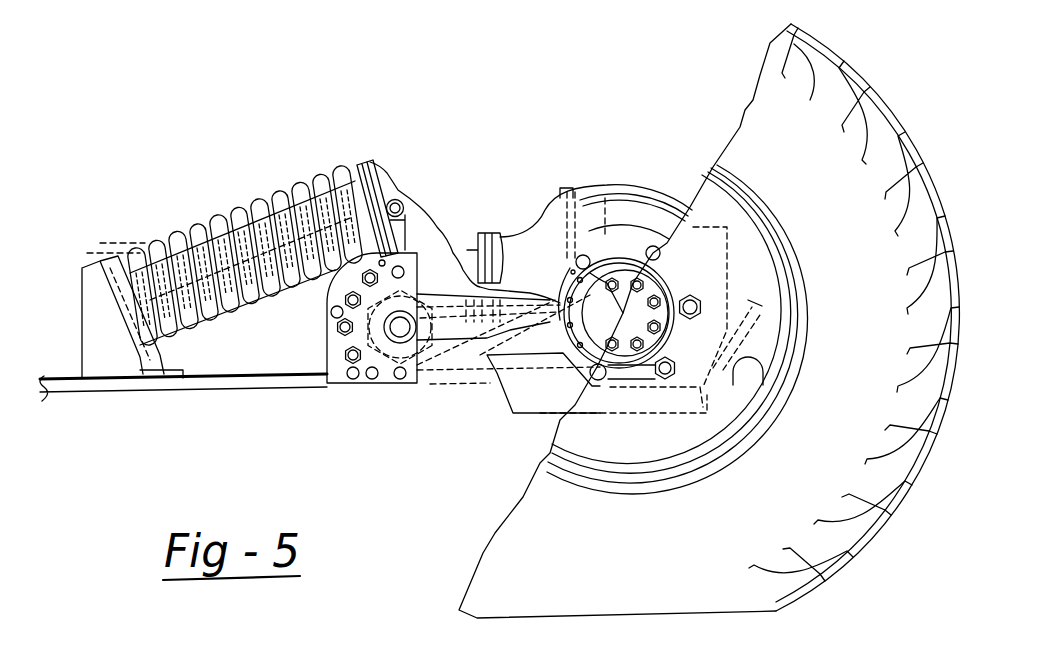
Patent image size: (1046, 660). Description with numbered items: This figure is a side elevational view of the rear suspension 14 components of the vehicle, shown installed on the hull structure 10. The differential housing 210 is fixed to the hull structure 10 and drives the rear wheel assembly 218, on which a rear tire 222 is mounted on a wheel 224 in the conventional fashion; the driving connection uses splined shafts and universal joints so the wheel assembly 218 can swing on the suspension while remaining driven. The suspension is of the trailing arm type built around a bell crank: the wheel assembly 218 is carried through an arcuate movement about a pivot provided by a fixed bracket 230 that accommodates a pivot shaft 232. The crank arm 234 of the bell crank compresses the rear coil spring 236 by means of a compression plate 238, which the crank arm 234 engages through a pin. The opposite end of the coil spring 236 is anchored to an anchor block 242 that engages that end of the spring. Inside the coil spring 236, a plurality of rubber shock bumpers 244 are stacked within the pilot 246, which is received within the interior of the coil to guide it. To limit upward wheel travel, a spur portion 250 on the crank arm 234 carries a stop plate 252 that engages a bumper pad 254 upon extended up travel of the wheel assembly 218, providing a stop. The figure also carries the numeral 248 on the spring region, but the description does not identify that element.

The hull structure 10 is at (173, 388).
The rear suspension 14 is at (548, 167).
The differential housing 210 is at (555, 185).
The rear wheel assembly 218 is at (531, 447).
The rear tire 222 is at (540, 463).
The wheel 224 is at (482, 552).
The fixed bracket 230 is at (327, 340).
The pivot shaft 232 is at (385, 347).
The crank arm 234 is at (427, 200).
The rear coil spring 236 is at (278, 200).
The compression plate 238 is at (370, 162).
The anchor block 242 is at (100, 257).
The rubber shock bumpers 244 is at (252, 203).
The pilot 246 is at (357, 173).
The spring guide rod 248 is at (147, 247).
The spur portion 250 is at (493, 237).
The stop plate 252 is at (530, 297).
The bumper pad 254 is at (493, 357).